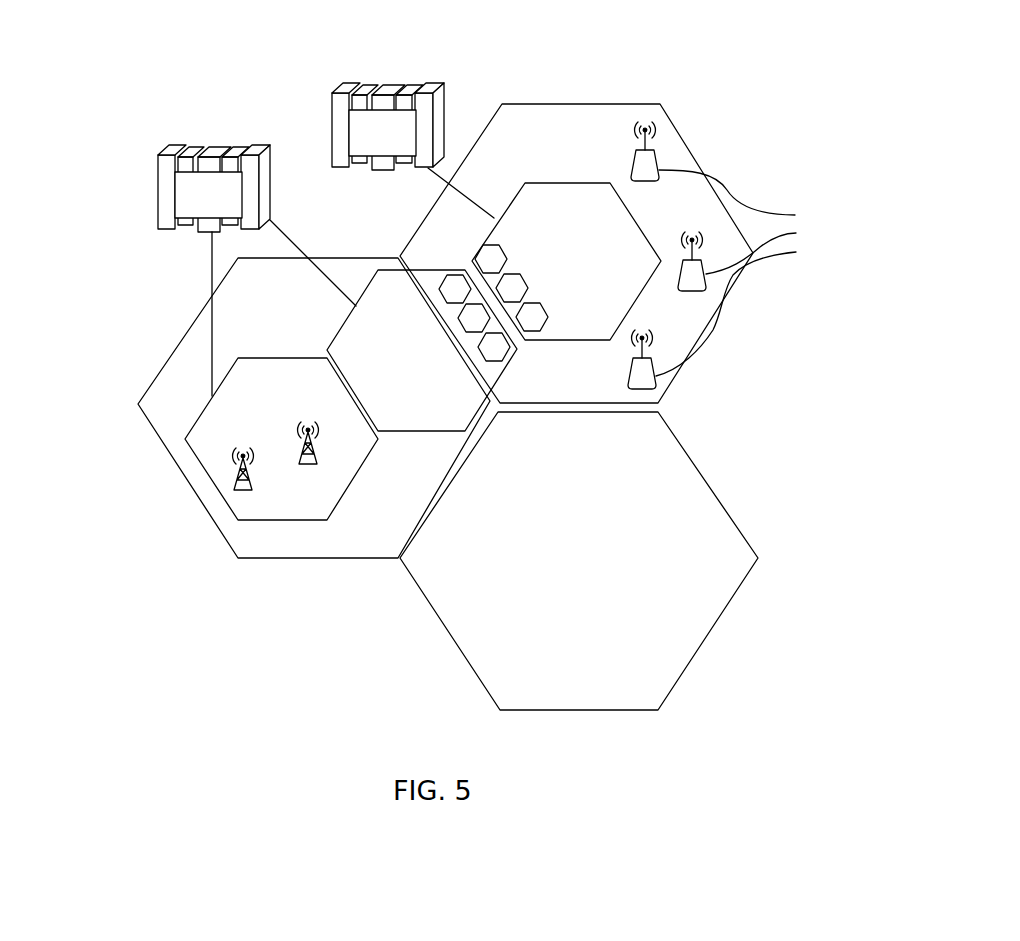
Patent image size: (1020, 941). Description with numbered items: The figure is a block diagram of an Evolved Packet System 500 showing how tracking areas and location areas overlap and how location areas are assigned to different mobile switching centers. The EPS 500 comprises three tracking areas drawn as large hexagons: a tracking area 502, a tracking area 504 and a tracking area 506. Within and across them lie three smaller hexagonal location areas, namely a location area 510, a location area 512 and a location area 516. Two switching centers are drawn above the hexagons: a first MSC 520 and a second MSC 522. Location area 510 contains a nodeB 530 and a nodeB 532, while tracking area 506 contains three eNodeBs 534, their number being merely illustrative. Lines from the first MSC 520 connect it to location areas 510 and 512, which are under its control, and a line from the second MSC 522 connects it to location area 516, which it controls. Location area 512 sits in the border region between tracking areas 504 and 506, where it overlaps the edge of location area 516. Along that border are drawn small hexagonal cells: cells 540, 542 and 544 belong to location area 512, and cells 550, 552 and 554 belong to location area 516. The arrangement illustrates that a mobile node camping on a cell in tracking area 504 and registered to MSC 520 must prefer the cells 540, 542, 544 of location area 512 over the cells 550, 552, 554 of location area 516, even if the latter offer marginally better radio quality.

The Evolved Packet System 500 is at (100, 89).
The tracking area 502 is at (443, 623).
The tracking area 504 is at (262, 558).
The tracking area 506 is at (689, 147).
The location area 510 is at (212, 480).
The location area 512 is at (443, 432).
The location area 516 is at (597, 341).
The first MSC 520 is at (158, 194).
The second MSC 522 is at (378, 171).
The NodeB 530 is at (233, 492).
The NodeB 532 is at (316, 465).
The eNodeBs 534 is at (741, 255).
The cell 540 is at (444, 306).
The cell 542 is at (461, 335).
The cell 544 is at (481, 359).
The cell 550 is at (508, 254).
The cell 552 is at (526, 279).
The cell 554 is at (546, 308).